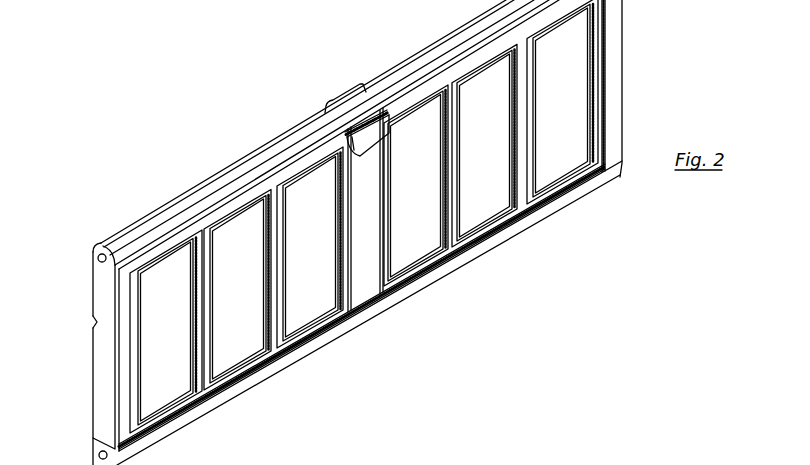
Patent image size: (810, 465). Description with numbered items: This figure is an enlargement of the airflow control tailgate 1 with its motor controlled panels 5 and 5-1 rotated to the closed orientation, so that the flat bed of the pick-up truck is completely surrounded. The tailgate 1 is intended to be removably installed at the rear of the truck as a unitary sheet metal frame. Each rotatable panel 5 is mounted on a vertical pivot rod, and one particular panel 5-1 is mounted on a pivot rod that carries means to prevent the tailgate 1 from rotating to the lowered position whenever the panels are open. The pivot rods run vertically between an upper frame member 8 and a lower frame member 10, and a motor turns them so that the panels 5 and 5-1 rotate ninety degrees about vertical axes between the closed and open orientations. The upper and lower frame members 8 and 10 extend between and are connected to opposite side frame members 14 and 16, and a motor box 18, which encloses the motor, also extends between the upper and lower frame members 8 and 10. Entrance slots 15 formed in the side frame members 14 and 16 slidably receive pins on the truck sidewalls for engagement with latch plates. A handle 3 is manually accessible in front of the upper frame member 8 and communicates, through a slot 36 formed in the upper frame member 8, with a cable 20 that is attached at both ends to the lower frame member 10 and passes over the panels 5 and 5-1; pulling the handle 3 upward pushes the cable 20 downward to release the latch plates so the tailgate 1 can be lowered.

The airflow control tailgate 1 is at (645, 106).
The handle 3 is at (376, 143).
The motor controlled panels 5 is at (568, 162).
The panel 5-1 is at (300, 311).
The upper frame member 8 is at (243, 180).
The lower frame member 10 is at (478, 263).
The side frame member 14 is at (99, 383).
The entrance slots 15 is at (93, 322).
The side frame member 16 is at (613, 33).
The motor box 18 is at (366, 294).
The cable 20 is at (368, 320).
The slot 36 is at (390, 110).